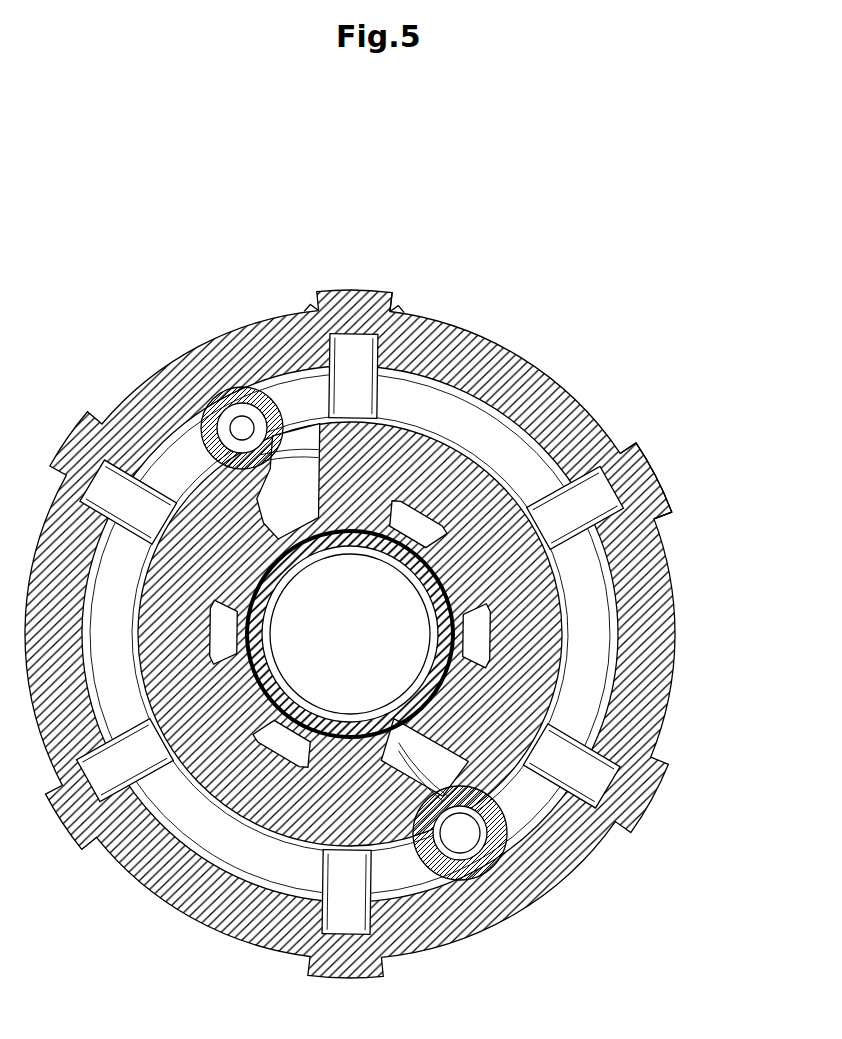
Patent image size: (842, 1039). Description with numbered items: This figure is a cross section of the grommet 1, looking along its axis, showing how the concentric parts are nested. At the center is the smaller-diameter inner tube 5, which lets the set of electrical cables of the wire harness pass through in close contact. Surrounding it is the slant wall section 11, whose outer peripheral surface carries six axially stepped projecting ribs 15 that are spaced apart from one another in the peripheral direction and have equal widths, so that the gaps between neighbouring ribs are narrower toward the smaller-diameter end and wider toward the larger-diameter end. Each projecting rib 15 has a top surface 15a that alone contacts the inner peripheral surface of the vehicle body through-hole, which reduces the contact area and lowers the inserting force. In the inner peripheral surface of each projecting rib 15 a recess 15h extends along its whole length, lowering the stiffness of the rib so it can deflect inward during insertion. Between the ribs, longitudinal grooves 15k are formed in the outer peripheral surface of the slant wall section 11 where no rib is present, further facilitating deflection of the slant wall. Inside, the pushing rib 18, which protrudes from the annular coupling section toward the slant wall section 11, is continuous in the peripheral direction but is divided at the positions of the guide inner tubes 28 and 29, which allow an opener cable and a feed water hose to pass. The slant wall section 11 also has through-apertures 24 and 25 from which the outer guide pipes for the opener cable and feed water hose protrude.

The grommet 1 is at (725, 174).
The inner tube 5 is at (442, 681).
The slant wall section 11 is at (533, 350).
The projecting rib 15 is at (357, 340).
The top surface 15a is at (655, 447).
The recess 15h is at (600, 497).
The longitudinal groove 15k is at (313, 306).
The pushing rib 18 is at (545, 615).
The through-aperture 24 is at (466, 847).
The through-aperture 25 is at (238, 426).
The guide inner tube 28 is at (545, 873).
The guide inner tube 29 is at (290, 385).